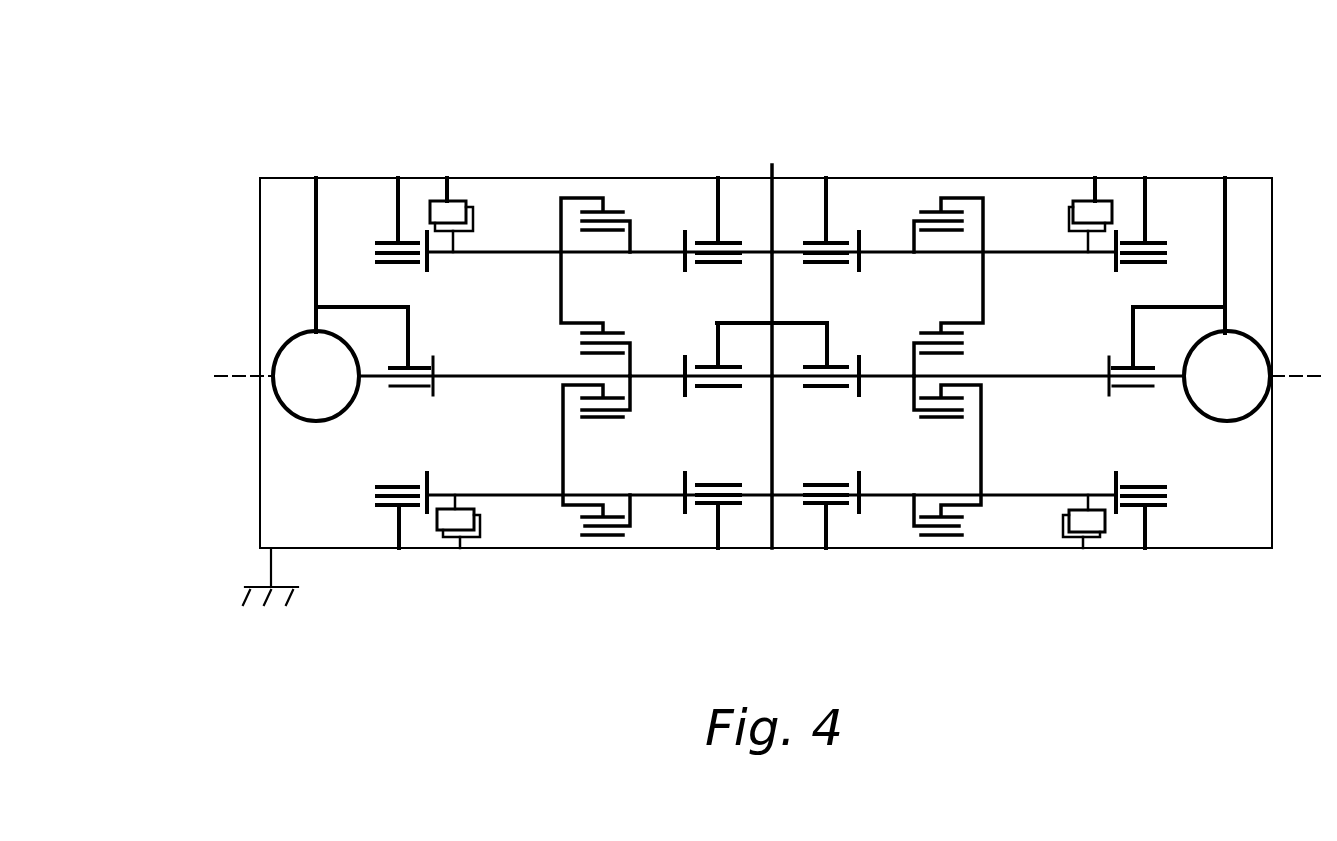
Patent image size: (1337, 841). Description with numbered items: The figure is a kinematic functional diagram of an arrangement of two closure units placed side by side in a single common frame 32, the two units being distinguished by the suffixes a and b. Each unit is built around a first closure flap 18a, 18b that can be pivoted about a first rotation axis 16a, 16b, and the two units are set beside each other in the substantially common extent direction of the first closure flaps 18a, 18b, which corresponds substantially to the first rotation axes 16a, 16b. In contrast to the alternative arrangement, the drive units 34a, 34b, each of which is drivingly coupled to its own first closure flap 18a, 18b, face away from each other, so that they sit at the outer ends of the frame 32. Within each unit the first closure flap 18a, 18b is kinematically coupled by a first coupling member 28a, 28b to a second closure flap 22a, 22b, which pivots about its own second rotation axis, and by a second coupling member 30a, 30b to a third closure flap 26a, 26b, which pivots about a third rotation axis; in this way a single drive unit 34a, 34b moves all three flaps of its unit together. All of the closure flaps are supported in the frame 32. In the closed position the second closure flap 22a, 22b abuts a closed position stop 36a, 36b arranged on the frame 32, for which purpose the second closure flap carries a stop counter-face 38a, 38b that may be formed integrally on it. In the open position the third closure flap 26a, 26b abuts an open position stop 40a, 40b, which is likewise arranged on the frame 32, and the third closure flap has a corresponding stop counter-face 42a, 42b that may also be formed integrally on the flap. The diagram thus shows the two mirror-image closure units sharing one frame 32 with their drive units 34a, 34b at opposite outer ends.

The first rotation axis 16a is at (224, 375).
The first rotation axis 16b is at (1309, 376).
The first closure flap 18a is at (467, 378).
The first closure flap 18b is at (1088, 378).
The second closure flap 22a is at (518, 252).
The second closure flap 22b is at (868, 252).
The third closure flap 26a is at (660, 495).
The third closure flap 26b is at (1017, 495).
The first coupling member 28a is at (570, 197).
The first coupling member 28b is at (940, 212).
The second coupling member 30a is at (563, 508).
The second coupling member 30b is at (978, 506).
The frame 32 is at (770, 549).
The drive unit 34a is at (316, 376).
The drive unit 34b is at (1227, 376).
The closed position stop 36a is at (448, 205).
The closed position stop 36b is at (1105, 206).
The stop counter-face 38a is at (475, 217).
The stop counter-face 38b is at (1067, 213).
The open position stop 40a is at (485, 536).
The open position stop 40b is at (1107, 538).
The stop counter-face 42a is at (447, 523).
The stop counter-face 42b is at (1068, 531).